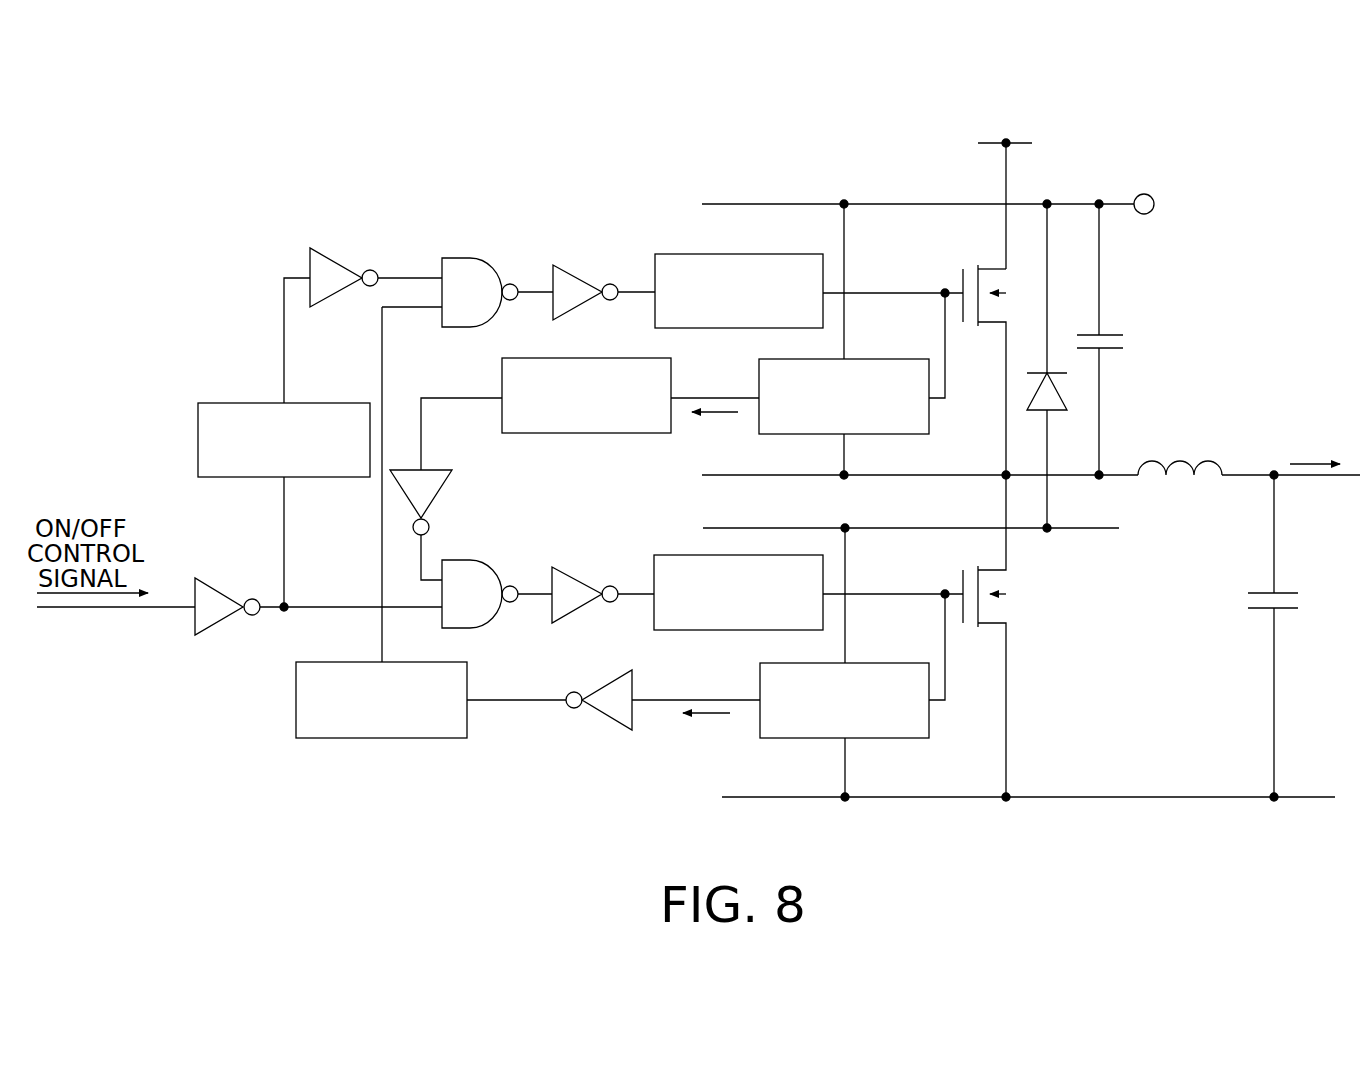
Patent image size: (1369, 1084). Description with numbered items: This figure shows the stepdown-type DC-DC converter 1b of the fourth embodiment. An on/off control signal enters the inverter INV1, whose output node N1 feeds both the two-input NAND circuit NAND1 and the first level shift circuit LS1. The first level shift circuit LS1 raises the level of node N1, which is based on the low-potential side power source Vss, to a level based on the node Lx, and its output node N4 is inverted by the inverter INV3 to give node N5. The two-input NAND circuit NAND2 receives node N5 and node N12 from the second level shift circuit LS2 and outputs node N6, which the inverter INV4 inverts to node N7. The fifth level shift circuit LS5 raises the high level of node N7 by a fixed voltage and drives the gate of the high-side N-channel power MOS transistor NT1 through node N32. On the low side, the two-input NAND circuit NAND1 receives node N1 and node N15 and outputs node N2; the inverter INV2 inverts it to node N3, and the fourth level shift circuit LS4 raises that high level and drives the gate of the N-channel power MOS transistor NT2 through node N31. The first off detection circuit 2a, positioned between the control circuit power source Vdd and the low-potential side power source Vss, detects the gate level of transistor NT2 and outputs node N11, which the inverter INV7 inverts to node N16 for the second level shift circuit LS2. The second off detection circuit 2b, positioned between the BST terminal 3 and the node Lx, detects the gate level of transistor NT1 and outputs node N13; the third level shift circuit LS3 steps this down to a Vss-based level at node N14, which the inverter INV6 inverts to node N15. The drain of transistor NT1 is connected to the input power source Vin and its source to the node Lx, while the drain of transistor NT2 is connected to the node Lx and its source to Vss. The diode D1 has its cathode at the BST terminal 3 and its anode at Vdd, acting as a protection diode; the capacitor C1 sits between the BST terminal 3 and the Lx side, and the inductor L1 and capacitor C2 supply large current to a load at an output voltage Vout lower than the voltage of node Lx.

The stepdown-type DC-DC converter 1b is at (1217, 232).
The first off detection circuit 2a is at (896, 663).
The second off detection circuit 2b is at (896, 359).
The BST terminal 3 is at (1144, 194).
The inverter INV1 is at (212, 635).
The inverter INV2 is at (580, 567).
The inverter INV3 is at (339, 249).
The inverter INV4 is at (575, 265).
The inverter INV6 is at (452, 477).
The inverter INV7 is at (598, 732).
The 2-input NAND circuit NAND1 is at (476, 560).
The 2-input NAND circuit NAND2 is at (468, 258).
The first level shift circuit LS1 is at (216, 403).
The second level shift circuit LS2 is at (383, 745).
The third level shift circuit LS3 is at (613, 437).
The fourth level shift circuit LS4 is at (664, 555).
The fifth level shift circuit LS5 is at (664, 254).
The N-channel power MOS transistor NT1 is at (962, 278).
The N-channel power MOS transistor NT2 is at (1005, 610).
The diode D1 is at (1058, 412).
The capacitor C1 is at (1125, 343).
The capacitor C2 is at (1300, 600).
The inductor L1 is at (1190, 460).
The input power source Vin is at (1022, 142).
The output voltage Vout is at (1291, 457).
The control circuit power source Vdd is at (1062, 528).
The low-potential side power source Vss is at (1315, 797).
The node Lx is at (920, 462).
The node N1 is at (351, 595).
The node N2 is at (533, 580).
The node N3 is at (633, 580).
The node N4 is at (303, 442).
The node N5 is at (410, 264).
The node N6 is at (534, 277).
The node N7 is at (634, 277).
The node N11 is at (696, 693).
The node N12 is at (385, 324).
The node N13 is at (715, 391).
The node N14 is at (461, 420).
The node N15 is at (408, 484).
The node N16 is at (516, 687).
The node N31 is at (893, 633).
The node N32 is at (893, 333).